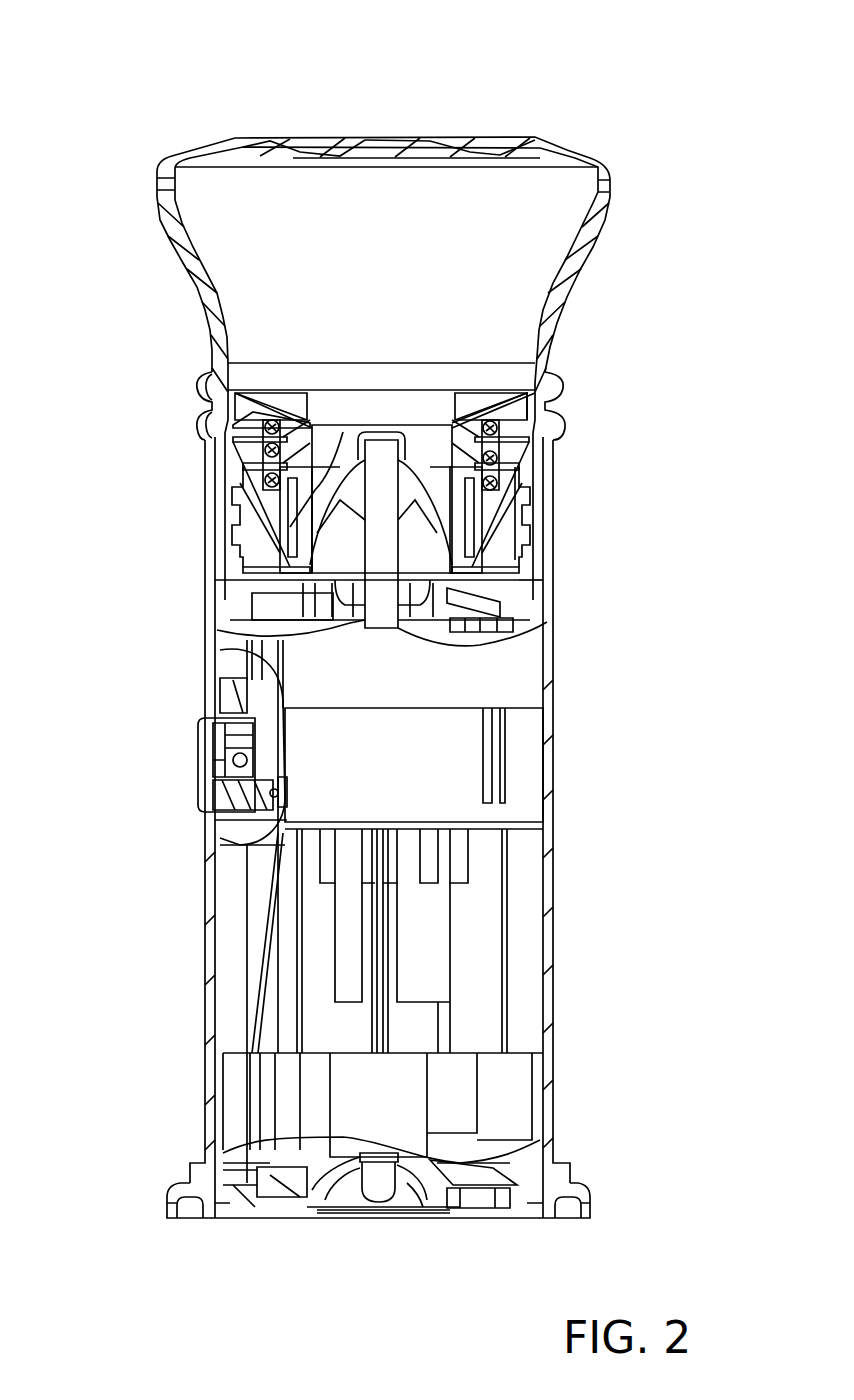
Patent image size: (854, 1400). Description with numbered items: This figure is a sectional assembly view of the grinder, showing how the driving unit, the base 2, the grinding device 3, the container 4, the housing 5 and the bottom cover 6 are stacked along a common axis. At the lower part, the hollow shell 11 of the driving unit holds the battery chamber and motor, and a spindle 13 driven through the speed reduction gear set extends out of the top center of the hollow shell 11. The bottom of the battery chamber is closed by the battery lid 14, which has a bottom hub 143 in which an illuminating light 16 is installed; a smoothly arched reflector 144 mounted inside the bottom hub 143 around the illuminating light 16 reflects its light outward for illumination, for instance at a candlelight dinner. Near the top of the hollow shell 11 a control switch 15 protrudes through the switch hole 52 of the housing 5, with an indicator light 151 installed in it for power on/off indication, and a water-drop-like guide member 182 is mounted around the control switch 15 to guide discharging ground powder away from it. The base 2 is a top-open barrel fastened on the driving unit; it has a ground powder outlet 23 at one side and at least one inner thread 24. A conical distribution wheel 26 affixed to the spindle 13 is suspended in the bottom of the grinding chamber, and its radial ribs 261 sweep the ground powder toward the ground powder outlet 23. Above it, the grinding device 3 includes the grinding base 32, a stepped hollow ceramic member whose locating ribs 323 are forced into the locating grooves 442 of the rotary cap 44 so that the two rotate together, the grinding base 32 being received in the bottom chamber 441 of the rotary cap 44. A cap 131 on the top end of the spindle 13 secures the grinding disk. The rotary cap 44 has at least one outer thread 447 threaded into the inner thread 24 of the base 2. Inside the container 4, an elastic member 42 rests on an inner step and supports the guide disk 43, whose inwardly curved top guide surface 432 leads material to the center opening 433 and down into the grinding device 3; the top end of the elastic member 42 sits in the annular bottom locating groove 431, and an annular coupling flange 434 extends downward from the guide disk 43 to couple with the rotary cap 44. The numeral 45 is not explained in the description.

The base 2 is at (535, 557).
The grinding device 3 is at (510, 455).
The container 4 is at (197, 293).
The housing 5 is at (205, 1010).
The bottom cover 6 is at (200, 1217).
The hollow shell 11 is at (253, 663).
The spindle 13 is at (280, 625).
The battery lid 14 is at (307, 1215).
The control switch 15 is at (198, 770).
The illuminating light 16 is at (373, 1183).
The ground powder outlet 23 is at (247, 605).
The inner thread 24 is at (535, 542).
The conical distribution wheel 26 is at (533, 590).
The grinding base 32 is at (280, 520).
The elastic member 42 is at (260, 462).
The guide disk 43 is at (207, 377).
The rotary cap 44 is at (217, 552).
The lens cover 45 is at (441, 138).
The switch hole 52 is at (213, 813).
The cap 131 is at (382, 430).
The bottom hub 143 is at (437, 1200).
The reflector 144 is at (407, 1203).
The indicator light 151 is at (247, 760).
The guide member 182 is at (237, 690).
The radial ribs 261 is at (510, 595).
The locating ribs 323 is at (535, 520).
The annular bottom locating groove 431 is at (210, 420).
The top guide surface 432 is at (450, 450).
The center opening 433 is at (343, 437).
The annular coupling flange 434 is at (247, 440).
The bottom chamber 441 is at (262, 480).
The locating grooves 442 is at (537, 477).
The outer thread 447 is at (533, 500).